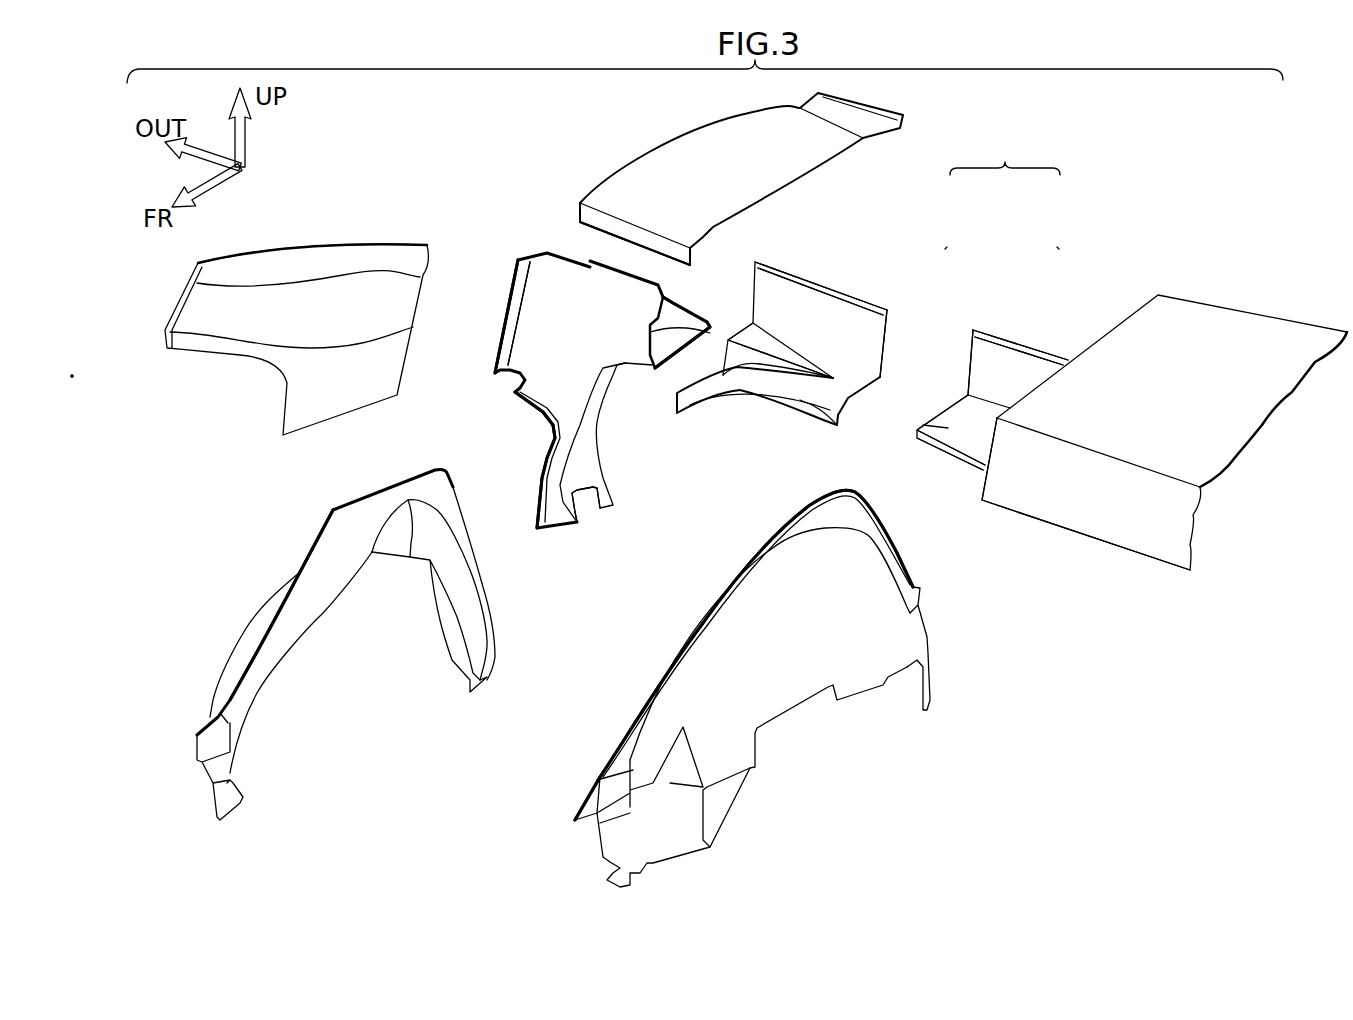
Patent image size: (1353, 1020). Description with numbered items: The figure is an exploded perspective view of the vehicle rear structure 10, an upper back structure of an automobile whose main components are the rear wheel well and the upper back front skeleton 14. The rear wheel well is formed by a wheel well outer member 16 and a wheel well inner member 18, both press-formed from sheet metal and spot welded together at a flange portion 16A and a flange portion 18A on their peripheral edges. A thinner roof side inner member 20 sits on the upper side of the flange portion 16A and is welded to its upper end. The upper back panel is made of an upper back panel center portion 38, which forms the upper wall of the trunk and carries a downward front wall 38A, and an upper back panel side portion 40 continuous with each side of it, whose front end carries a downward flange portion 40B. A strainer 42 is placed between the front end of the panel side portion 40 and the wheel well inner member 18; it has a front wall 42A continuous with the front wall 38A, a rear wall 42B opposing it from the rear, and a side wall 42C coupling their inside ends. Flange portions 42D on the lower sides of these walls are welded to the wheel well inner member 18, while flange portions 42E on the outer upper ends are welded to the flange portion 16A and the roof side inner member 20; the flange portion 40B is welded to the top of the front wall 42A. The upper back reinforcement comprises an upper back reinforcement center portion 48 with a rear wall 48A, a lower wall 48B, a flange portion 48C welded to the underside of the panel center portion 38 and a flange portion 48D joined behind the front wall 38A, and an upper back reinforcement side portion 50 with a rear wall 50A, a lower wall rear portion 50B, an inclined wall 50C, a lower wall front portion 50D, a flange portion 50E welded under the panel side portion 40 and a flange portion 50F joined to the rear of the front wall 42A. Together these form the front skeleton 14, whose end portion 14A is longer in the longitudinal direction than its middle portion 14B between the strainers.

The vehicle rear structure 10 is at (1102, 133).
The upper back front skeleton 14 is at (1003, 192).
The vehicle width direction end portion 14A is at (947, 247).
The vehicle width direction middle portion 14B is at (1057, 247).
The wheel well outer member 16 is at (258, 597).
The flange portion 16A is at (315, 537).
The wheel well inner member 18 is at (793, 717).
The flange portion 18A is at (707, 600).
The roof side inner member 20 is at (293, 247).
The upper back panel center portion 38 is at (1147, 305).
The front wall 38A is at (1080, 520).
The upper back panel side portion 40 is at (683, 138).
The flange portion 40B is at (578, 210).
The strainer 42 is at (608, 418).
The front wall 42A is at (532, 288).
The rear wall 42B is at (680, 300).
The side wall 42C is at (590, 467).
The flange portions 42D is at (547, 450).
The flange portions 42E is at (510, 352).
The upper back reinforcement center portion 48 is at (1012, 337).
The rear wall 48A is at (973, 377).
The lower wall 48B is at (917, 432).
The flange portion 48C is at (1043, 355).
The flange portion 48D is at (950, 458).
The upper back reinforcement side portion 50 is at (805, 270).
The rear wall 50A is at (883, 337).
The lower wall rear portion 50B is at (783, 348).
The inclined wall 50C is at (740, 368).
The lower wall front portion 50D is at (772, 380).
The flange portion 50E is at (835, 277).
The flange portion 50F is at (817, 413).